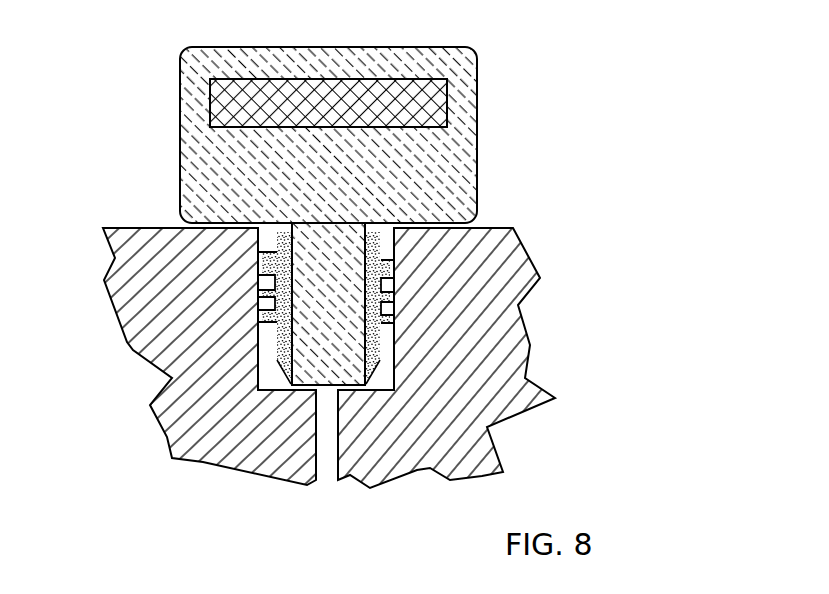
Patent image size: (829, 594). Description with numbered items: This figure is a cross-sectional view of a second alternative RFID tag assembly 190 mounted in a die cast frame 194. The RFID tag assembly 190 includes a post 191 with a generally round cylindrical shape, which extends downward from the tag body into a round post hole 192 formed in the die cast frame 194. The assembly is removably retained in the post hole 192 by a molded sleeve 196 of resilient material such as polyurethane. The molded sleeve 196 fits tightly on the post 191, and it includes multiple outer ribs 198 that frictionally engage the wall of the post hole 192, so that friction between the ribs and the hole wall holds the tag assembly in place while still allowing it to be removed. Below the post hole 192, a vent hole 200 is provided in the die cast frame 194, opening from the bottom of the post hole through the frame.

The RFID tag assembly 190 is at (602, 82).
The post 191 is at (330, 248).
The post hole 192 is at (270, 362).
The die cast frame 194 is at (539, 388).
The molded sleeve 196 is at (278, 253).
The outer ribs 198 is at (394, 310).
The vent hole 200 is at (323, 443).